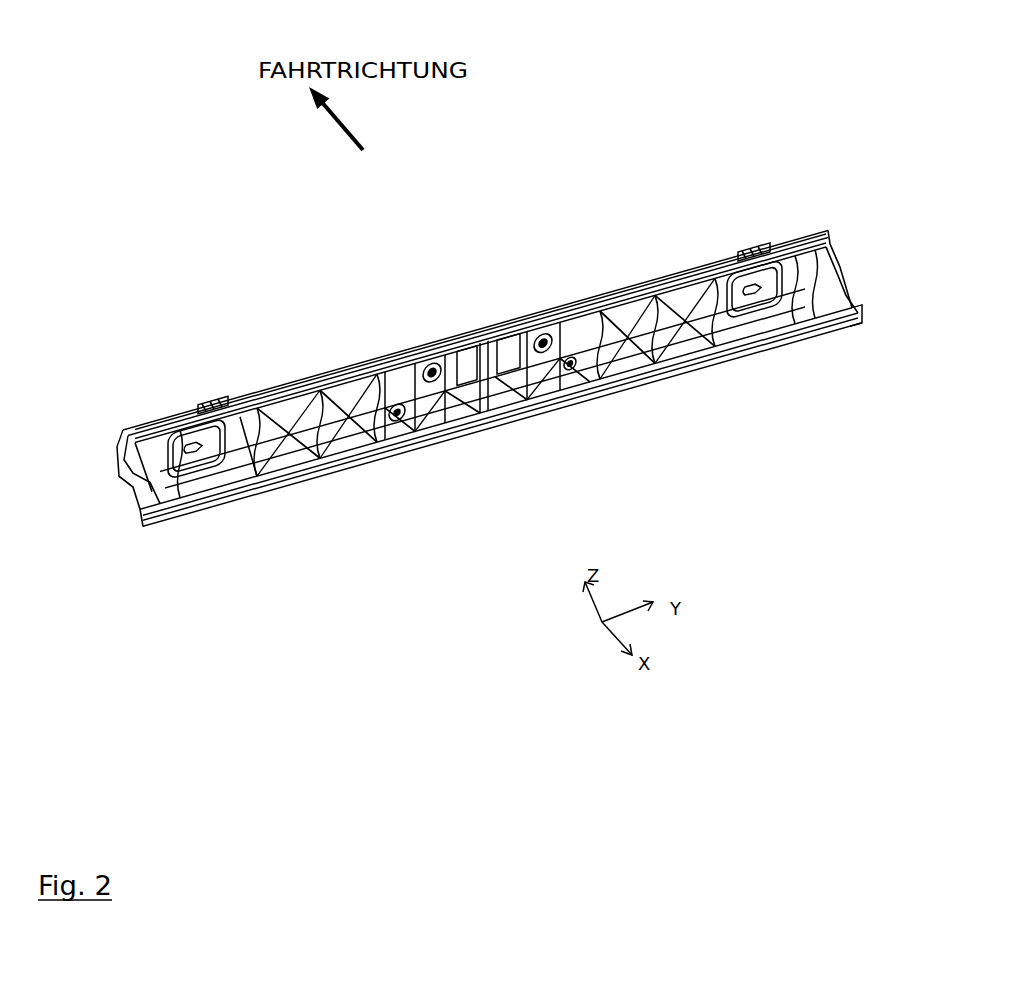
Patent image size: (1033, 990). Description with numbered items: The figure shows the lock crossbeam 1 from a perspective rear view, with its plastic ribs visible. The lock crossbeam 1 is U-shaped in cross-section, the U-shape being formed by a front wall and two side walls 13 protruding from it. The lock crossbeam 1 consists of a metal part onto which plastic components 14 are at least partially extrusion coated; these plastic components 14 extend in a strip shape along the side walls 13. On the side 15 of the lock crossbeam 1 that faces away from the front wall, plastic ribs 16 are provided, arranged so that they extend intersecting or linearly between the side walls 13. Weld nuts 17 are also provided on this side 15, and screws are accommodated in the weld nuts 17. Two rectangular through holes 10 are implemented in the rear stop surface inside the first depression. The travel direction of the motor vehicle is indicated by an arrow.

The lock crossbeam 1 is at (442, 538).
The rectangular through holes 10 is at (508, 355).
The side walls 13 is at (662, 278).
The plastic components 14 is at (282, 392).
The side facing away from the front wall 15 is at (670, 317).
The plastic ribs 16 is at (617, 363).
The weld nuts 17 is at (432, 372).